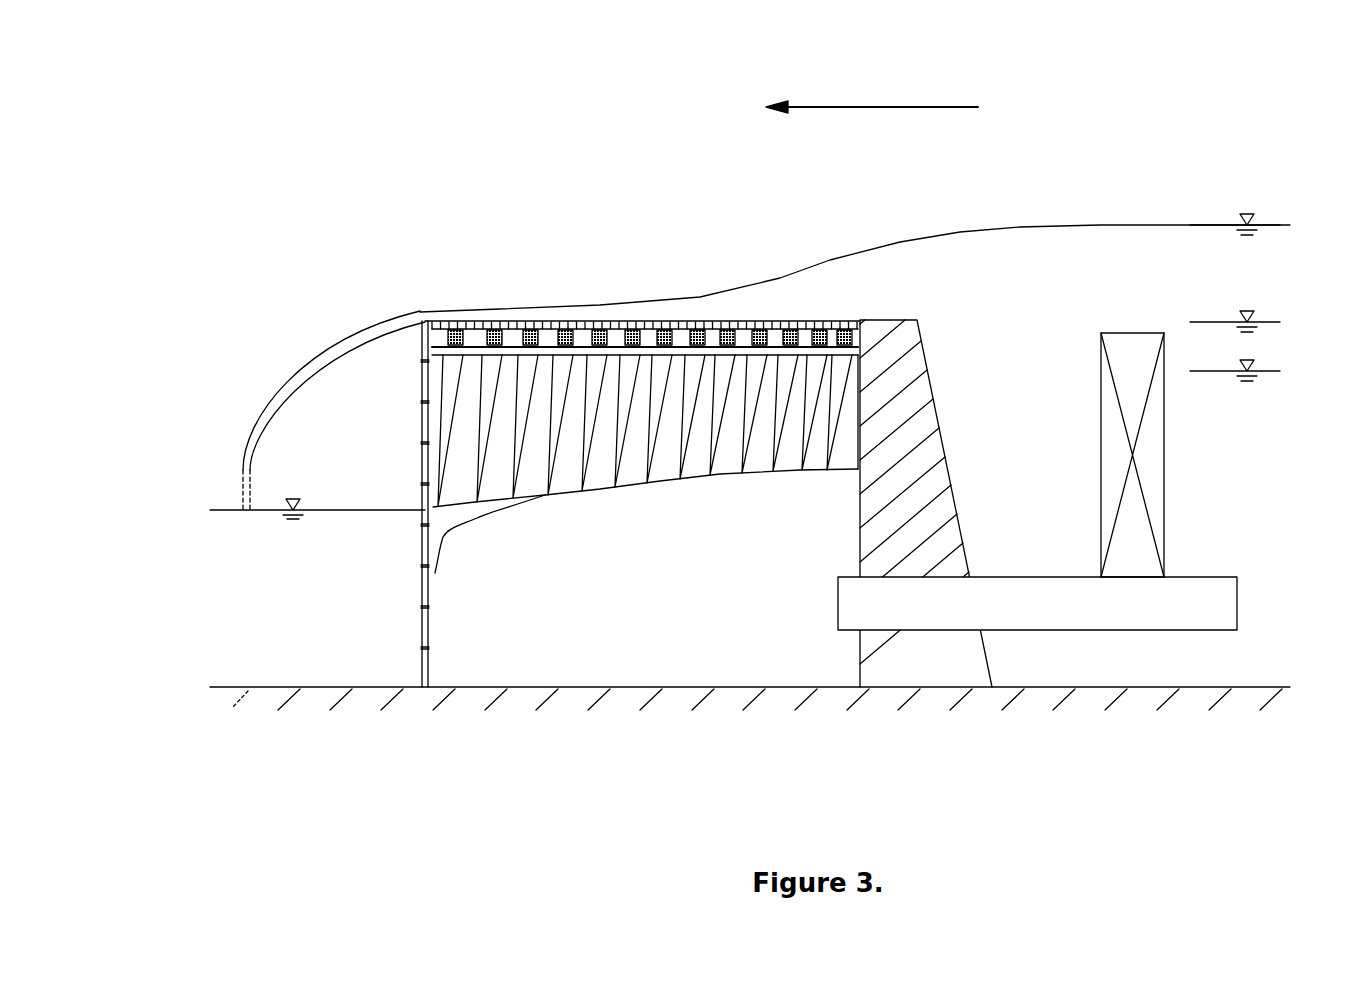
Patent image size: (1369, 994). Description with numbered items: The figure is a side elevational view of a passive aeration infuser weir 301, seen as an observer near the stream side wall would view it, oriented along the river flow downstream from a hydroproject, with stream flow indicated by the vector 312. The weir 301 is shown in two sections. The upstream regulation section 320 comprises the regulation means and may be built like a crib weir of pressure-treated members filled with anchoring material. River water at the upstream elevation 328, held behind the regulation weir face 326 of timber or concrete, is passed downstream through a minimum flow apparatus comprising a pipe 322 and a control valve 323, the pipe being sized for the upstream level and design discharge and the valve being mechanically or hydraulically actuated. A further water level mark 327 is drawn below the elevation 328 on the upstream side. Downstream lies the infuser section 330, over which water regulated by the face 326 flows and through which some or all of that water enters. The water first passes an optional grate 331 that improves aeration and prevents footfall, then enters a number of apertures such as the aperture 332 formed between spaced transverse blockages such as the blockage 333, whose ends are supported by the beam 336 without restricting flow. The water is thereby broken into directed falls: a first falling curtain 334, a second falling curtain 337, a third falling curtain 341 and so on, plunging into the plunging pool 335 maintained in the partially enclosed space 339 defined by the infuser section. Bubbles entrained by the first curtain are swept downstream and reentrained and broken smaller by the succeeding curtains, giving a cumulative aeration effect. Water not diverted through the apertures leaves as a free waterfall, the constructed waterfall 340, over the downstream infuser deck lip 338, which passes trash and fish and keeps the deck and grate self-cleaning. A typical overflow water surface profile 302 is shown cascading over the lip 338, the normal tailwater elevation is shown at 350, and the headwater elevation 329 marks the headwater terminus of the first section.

The infuser weir 301 is at (665, 192).
The water surface profile 302 is at (833, 260).
The vector 312 is at (872, 92).
The regulation section 320 is at (1022, 353).
The pipe 322 is at (1030, 593).
The control valve 323 is at (1164, 490).
The regulation weir face 326 is at (936, 410).
The low water level 327 is at (1267, 372).
The upstream water elevation 328 is at (1267, 323).
The headwater elevation 329 is at (1267, 226).
The infuser section 330 is at (478, 242).
The grate 331 is at (797, 318).
The aperture 332 is at (650, 342).
The blockage 333 is at (425, 423).
The first falling curtain 334 is at (855, 448).
The plunging pool 335 is at (590, 580).
The beam 336 is at (425, 425).
The second falling curtain 337 is at (828, 440).
The infuser deck lip 338 is at (413, 330).
The partially enclosed space 339 is at (430, 579).
The constructed waterfall 340 is at (288, 362).
The third falling curtain 341 is at (805, 440).
The tailwater elevation 350 is at (287, 511).